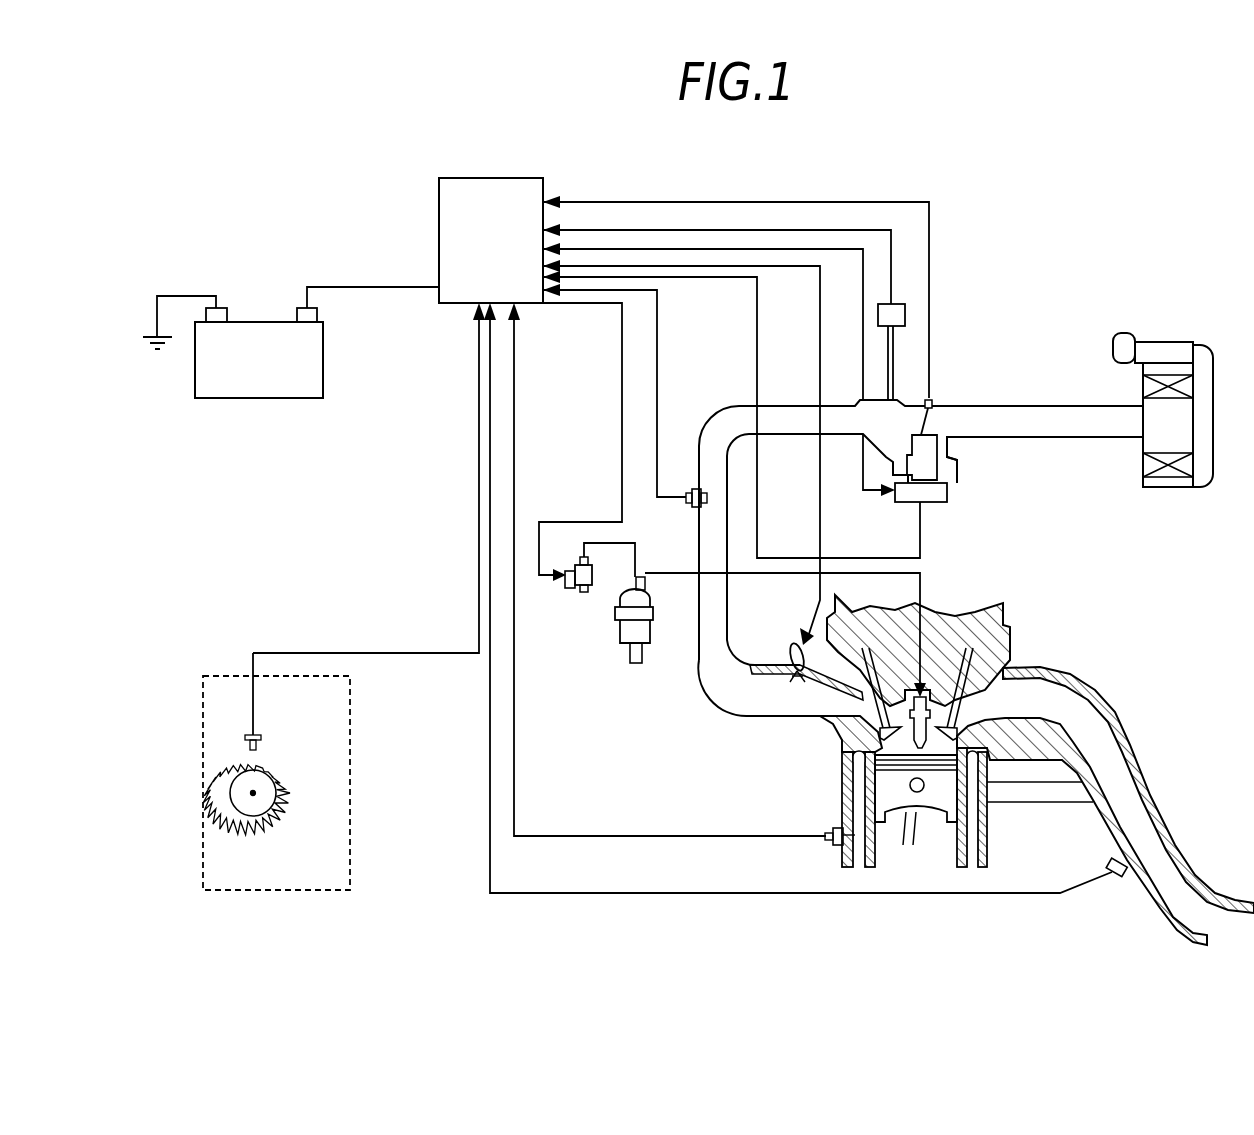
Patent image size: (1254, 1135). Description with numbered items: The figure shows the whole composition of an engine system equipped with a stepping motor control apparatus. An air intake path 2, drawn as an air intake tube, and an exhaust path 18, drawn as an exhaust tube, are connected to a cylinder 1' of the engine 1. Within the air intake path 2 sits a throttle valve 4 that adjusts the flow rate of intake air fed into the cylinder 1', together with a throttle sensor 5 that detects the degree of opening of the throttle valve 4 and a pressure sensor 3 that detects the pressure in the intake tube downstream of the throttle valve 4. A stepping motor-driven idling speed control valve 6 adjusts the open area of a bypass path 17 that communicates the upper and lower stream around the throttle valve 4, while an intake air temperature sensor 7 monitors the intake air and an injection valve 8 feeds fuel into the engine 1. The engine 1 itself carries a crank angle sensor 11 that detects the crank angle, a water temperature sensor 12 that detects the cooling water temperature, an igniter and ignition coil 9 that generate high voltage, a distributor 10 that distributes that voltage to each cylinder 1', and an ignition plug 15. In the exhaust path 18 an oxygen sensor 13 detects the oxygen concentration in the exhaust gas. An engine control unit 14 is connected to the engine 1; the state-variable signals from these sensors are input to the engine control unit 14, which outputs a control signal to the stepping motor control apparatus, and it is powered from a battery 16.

The engine 1 is at (1013, 770).
The cylinder 1' is at (967, 807).
The air intake path 2 is at (1087, 437).
The pressure sensor 3 is at (902, 304).
The throttle valve 4 is at (940, 415).
The throttle sensor 5 is at (936, 396).
The idling speed control valve 6 is at (952, 483).
The intake air temperature sensor 7 is at (687, 512).
The injection valve 8 is at (795, 645).
The igniter and ignition coil 9 is at (583, 592).
The distributor 10 is at (653, 637).
The crank angle sensor 11 is at (210, 676).
The water temperature sensor 12 is at (828, 834).
The oxygen sensor 13 is at (1123, 875).
The engine control unit 14 is at (439, 213).
The ignition plug 15 is at (933, 690).
The battery 16 is at (270, 398).
The bypass path 17 is at (950, 457).
The exhaust path 18 is at (1140, 753).